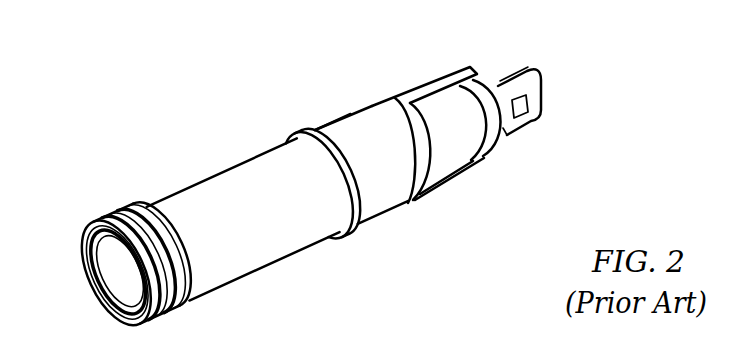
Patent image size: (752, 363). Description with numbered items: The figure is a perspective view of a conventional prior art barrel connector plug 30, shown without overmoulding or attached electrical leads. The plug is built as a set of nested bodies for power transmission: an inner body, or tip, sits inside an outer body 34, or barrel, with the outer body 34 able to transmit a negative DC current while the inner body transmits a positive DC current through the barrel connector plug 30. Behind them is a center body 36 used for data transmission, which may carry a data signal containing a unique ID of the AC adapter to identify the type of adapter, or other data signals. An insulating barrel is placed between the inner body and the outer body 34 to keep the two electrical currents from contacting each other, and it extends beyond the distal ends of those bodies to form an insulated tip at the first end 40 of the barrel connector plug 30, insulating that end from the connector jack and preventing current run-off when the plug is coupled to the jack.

The barrel connector plug 30 is at (155, 92).
The outer body 34 is at (361, 94).
The center body 36 is at (518, 63).
The first end 40 is at (83, 302).